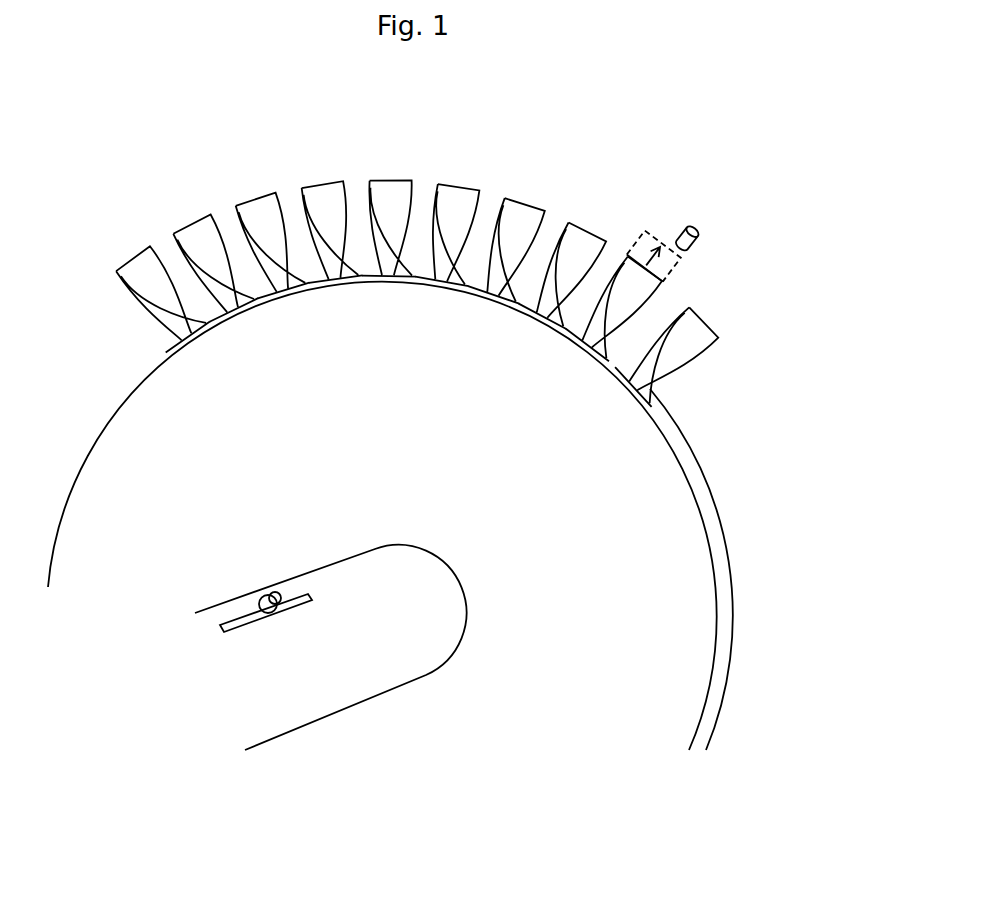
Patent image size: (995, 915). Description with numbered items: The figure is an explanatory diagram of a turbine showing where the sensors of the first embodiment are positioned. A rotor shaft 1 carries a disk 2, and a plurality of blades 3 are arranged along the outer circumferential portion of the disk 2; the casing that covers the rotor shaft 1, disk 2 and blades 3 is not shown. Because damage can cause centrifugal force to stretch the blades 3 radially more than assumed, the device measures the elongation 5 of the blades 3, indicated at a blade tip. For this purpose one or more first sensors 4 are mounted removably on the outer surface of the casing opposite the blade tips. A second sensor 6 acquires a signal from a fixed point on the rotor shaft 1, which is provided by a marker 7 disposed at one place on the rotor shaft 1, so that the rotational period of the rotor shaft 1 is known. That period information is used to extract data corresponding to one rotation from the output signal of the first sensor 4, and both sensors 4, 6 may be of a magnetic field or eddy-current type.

The rotor shaft 1 is at (380, 578).
The disk 2 is at (660, 482).
The blades 3 is at (260, 227).
The first sensor 4 is at (690, 223).
The elongation 5 is at (672, 272).
The second sensor 6 is at (267, 592).
The marker 7 is at (230, 624).